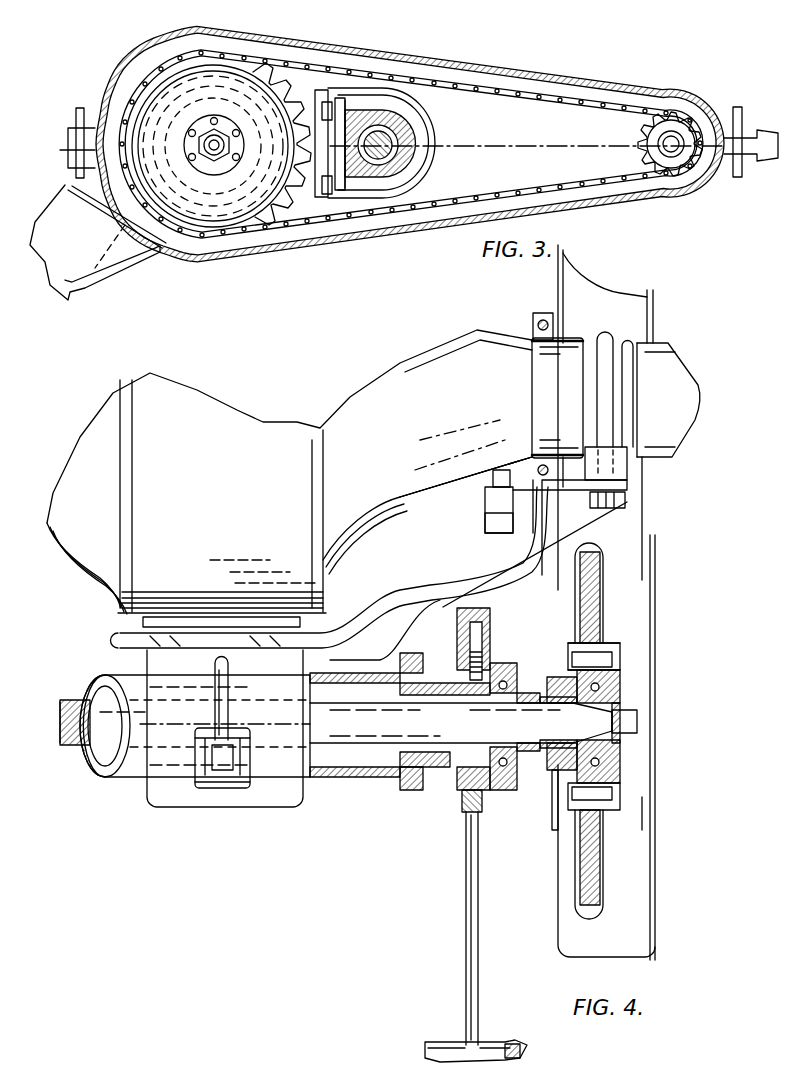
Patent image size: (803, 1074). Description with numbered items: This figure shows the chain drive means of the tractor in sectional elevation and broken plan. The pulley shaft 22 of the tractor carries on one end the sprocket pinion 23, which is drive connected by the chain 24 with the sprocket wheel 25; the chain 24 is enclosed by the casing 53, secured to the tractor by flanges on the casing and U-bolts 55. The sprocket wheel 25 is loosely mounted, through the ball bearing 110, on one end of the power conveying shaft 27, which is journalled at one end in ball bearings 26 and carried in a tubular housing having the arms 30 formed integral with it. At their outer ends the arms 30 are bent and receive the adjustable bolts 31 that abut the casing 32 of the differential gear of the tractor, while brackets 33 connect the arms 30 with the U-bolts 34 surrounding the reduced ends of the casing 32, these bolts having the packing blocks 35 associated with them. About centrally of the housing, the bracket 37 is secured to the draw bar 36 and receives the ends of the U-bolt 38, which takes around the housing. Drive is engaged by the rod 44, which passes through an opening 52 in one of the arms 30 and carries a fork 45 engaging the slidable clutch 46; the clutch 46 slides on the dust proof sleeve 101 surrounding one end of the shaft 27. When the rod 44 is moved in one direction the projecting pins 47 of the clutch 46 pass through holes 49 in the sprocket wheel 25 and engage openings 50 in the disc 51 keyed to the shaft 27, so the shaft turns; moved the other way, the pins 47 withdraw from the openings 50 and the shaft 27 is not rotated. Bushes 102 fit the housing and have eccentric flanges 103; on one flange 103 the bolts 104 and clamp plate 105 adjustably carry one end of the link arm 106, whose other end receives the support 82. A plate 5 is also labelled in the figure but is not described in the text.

In FIG. 4, the supporting plate 5 is at (650, 535).
In FIG. 3, the pulley shaft 22 is at (677, 137).
In FIG. 3, the sprocket pinion 23 is at (636, 120).
In FIG. 3, the chain 24 is at (440, 74).
In FIG. 3, the sprocket wheel 25 is at (292, 228).
In FIG. 4, the sprocket wheel 25 is at (597, 590).
In FIG. 4, the ball bearings 26 is at (492, 782).
In FIG. 3, the power conveying shaft 27 is at (216, 150).
In FIG. 4, the power conveying shaft 27 is at (355, 718).
In FIG. 4, the arms 30 is at (500, 562).
In FIG. 4, the adjustable bolts 31 is at (498, 474).
In FIG. 3, the casing of the differential gear 32 is at (405, 122).
In FIG. 4, the casing of the differential gear 32 is at (289, 478).
In FIG. 3, the brackets 33 is at (340, 178).
In FIG. 4, the brackets 33 is at (556, 485).
In FIG. 3, the U-bolts 34 is at (400, 172).
In FIG. 4, the U-bolts 34 is at (608, 412).
In FIG. 3, the packing blocks 35 is at (362, 190).
In FIG. 4, the packing blocks 35 is at (660, 462).
In FIG. 4, the draw bar 36 is at (147, 672).
In FIG. 4, the bracket 37 is at (218, 782).
In FIG. 4, the U-bolt 38 is at (218, 712).
In FIG. 4, the rod 44 is at (363, 610).
In FIG. 4, the fork 45 is at (548, 672).
In FIG. 4, the slidable clutch 46 is at (555, 830).
In FIG. 3, the projecting pins 47 is at (258, 258).
In FIG. 4, the projecting pins 47 is at (618, 657).
In FIG. 4, the holes 49 is at (620, 767).
In FIG. 4, the openings 50 is at (620, 663).
In FIG. 4, the disc 51 is at (620, 685).
In FIG. 4, the opening 52 is at (470, 583).
In FIG. 3, the casing 53 is at (602, 200).
In FIG. 4, the casing 53 is at (650, 305).
In FIG. 4, the U-bolts 55 is at (540, 318).
In FIG. 4, the support 82 is at (425, 1045).
In FIG. 4, the dust proof sleeve 101 is at (558, 790).
In FIG. 4, the bushes 102 is at (400, 775).
In FIG. 4, the eccentric flanges 103 is at (398, 600).
In FIG. 4, the bolts 104 is at (430, 657).
In FIG. 4, the clamp plate 105 is at (435, 790).
In FIG. 3, the link arm 106 is at (75, 255).
In FIG. 4, the link arm 106 is at (465, 932).
In FIG. 4, the ball bearing 110 is at (618, 697).